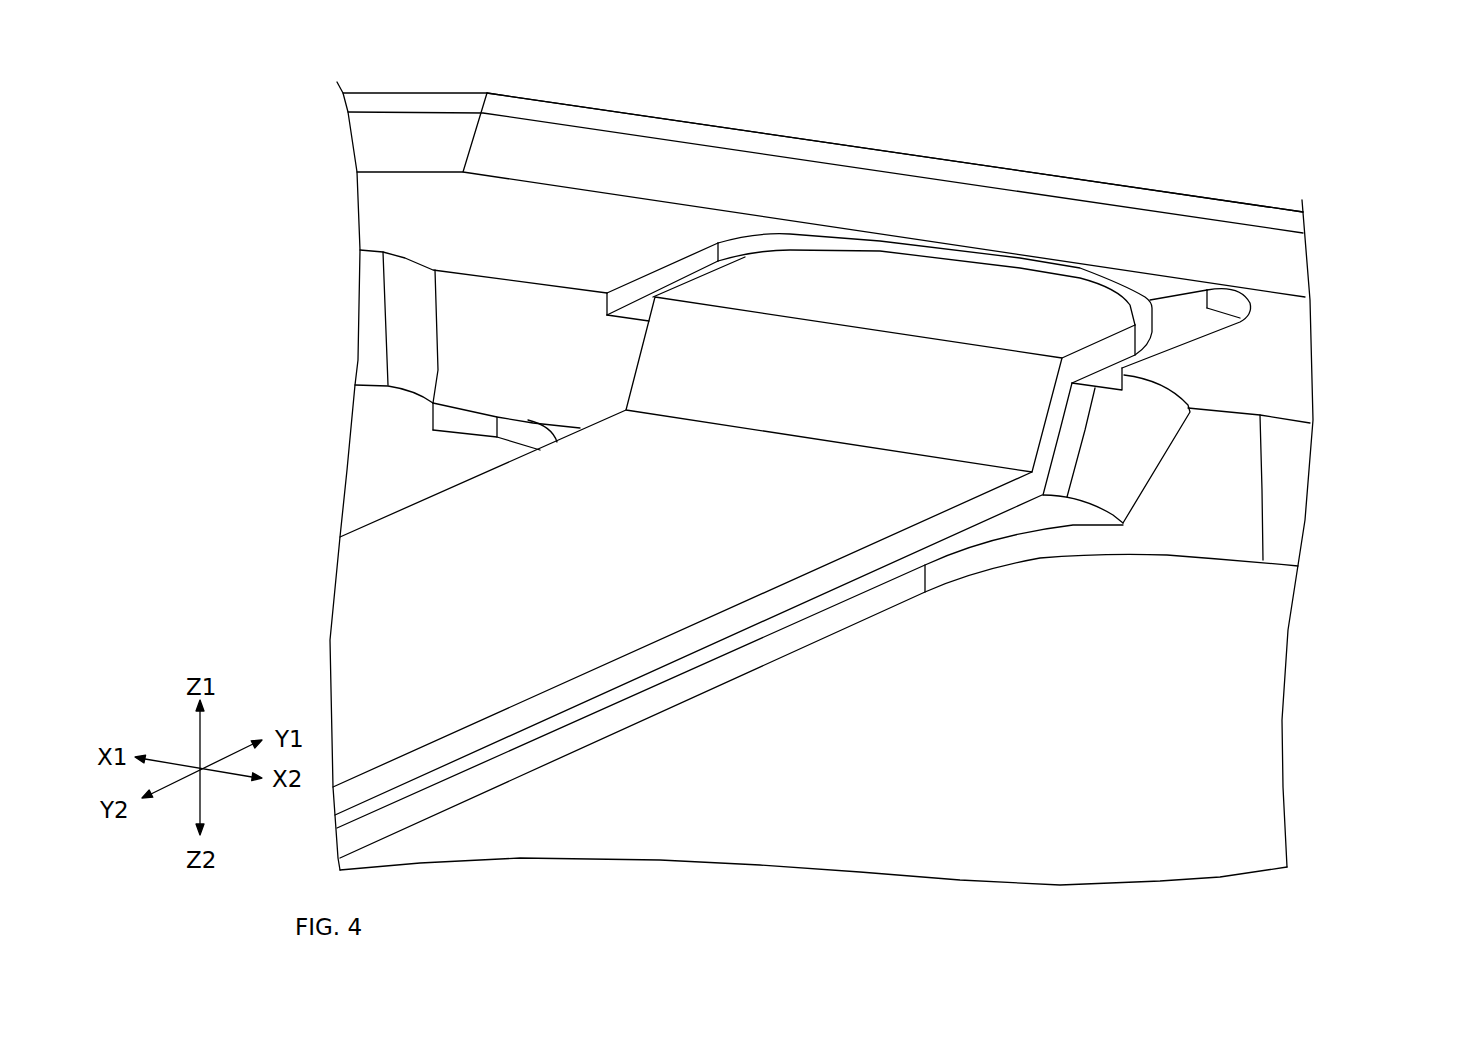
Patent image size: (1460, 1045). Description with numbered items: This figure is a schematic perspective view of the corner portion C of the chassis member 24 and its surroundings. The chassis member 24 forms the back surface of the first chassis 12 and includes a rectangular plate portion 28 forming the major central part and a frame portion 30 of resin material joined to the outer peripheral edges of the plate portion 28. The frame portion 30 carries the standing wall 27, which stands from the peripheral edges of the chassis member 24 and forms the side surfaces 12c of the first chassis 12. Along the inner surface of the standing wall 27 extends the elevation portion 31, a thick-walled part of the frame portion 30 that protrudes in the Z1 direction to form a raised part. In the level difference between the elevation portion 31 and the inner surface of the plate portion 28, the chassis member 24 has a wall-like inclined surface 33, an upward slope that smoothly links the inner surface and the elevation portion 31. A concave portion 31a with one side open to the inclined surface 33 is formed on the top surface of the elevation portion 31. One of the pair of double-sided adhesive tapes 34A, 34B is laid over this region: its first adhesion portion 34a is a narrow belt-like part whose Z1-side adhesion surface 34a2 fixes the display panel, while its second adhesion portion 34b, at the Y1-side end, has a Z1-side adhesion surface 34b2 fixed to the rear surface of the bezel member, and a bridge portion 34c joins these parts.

The first chassis 12 is at (259, 63).
The corner portion C is at (423, 82).
The side surfaces 12c is at (607, 107).
The elevation portion 31 is at (676, 228).
The standing wall 27 is at (897, 160).
The second adhesion portion 34b is at (879, 293).
The Z1-side adhesion surface 34b2 is at (999, 290).
The concave portion 31a is at (1180, 315).
The inclined surface 33 is at (490, 337).
The double-sided adhesive tape 34A is at (406, 517).
The double-sided adhesive tape 34B is at (408, 622).
The frame portion 30 is at (1262, 368).
The chassis member 24 is at (1373, 365).
The plate portion 28 is at (1228, 610).
The first adhesion portion 34a is at (728, 697).
The Z1-side adhesion surface 34a2 is at (577, 650).
The bridge portion 34c is at (857, 415).